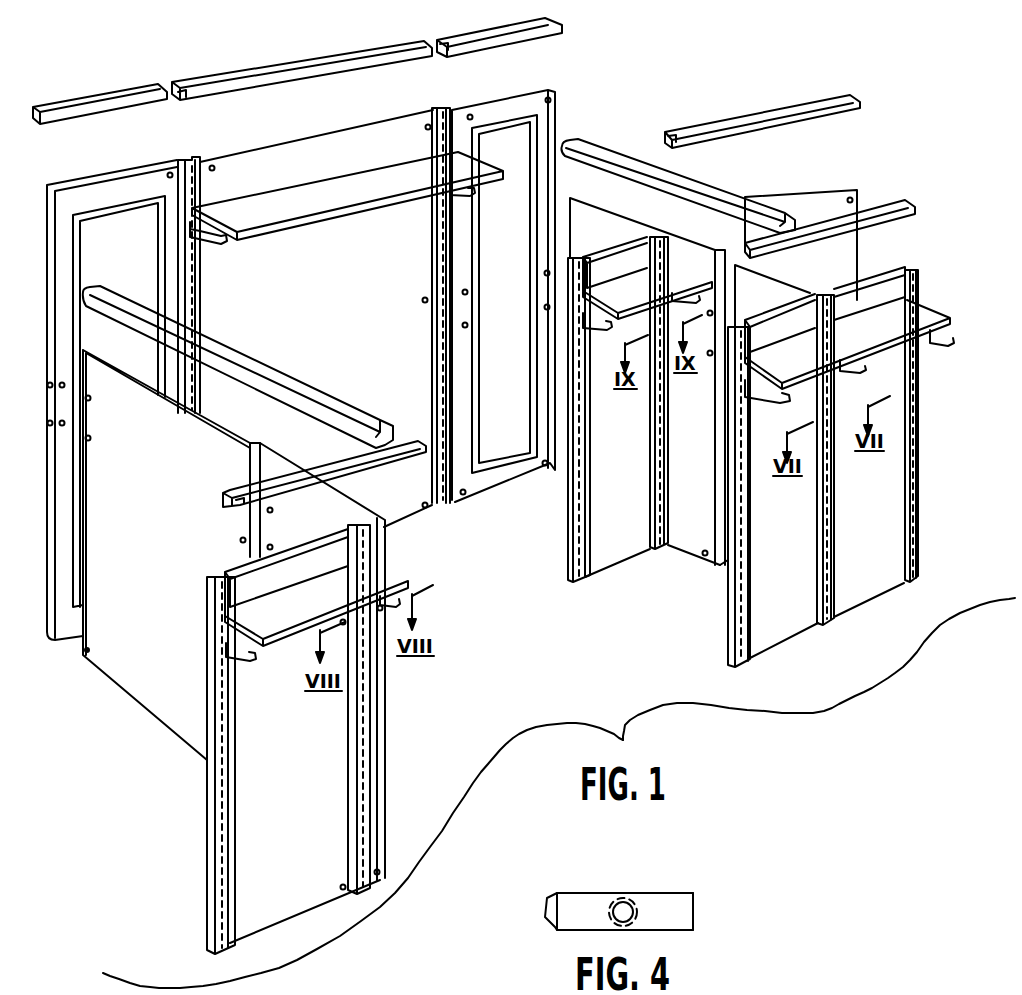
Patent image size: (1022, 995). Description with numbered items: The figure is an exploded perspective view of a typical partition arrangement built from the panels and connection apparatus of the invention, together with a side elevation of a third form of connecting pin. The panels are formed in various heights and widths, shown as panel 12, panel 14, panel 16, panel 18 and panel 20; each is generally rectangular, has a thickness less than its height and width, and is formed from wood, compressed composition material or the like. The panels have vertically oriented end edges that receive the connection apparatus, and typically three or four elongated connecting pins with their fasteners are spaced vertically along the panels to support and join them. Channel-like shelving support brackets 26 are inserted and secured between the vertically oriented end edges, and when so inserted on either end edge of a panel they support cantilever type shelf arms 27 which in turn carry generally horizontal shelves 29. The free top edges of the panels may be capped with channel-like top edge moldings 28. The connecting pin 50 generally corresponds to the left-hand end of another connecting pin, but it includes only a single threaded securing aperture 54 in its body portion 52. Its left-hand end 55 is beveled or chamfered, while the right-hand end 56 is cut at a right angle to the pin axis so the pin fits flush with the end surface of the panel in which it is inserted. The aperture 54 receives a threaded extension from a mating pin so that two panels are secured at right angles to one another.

In FIG. 1, the panel 12 is at (311, 528).
In FIG. 1, the panel 14 is at (170, 481).
In FIG. 1, the panel 16 is at (134, 260).
In FIG. 1, the panel 18 is at (358, 264).
In FIG. 1, the panel 20 is at (628, 483).
In FIG. 1, the shelving support channel bracket 26 is at (193, 297).
In FIG. 1, the shelf arm 27 is at (211, 242).
In FIG. 1, the top edge molding 28 is at (436, 44).
In FIG. 1, the shelf 29 is at (333, 607).
In FIG. 4, the connecting pin 50 is at (642, 907).
In FIG. 4, the body portion 52 is at (577, 900).
In FIG. 4, the threaded securing aperture 54 is at (624, 901).
In FIG. 4, the left-hand end 55 is at (553, 932).
In FIG. 4, the end face 56 is at (693, 912).